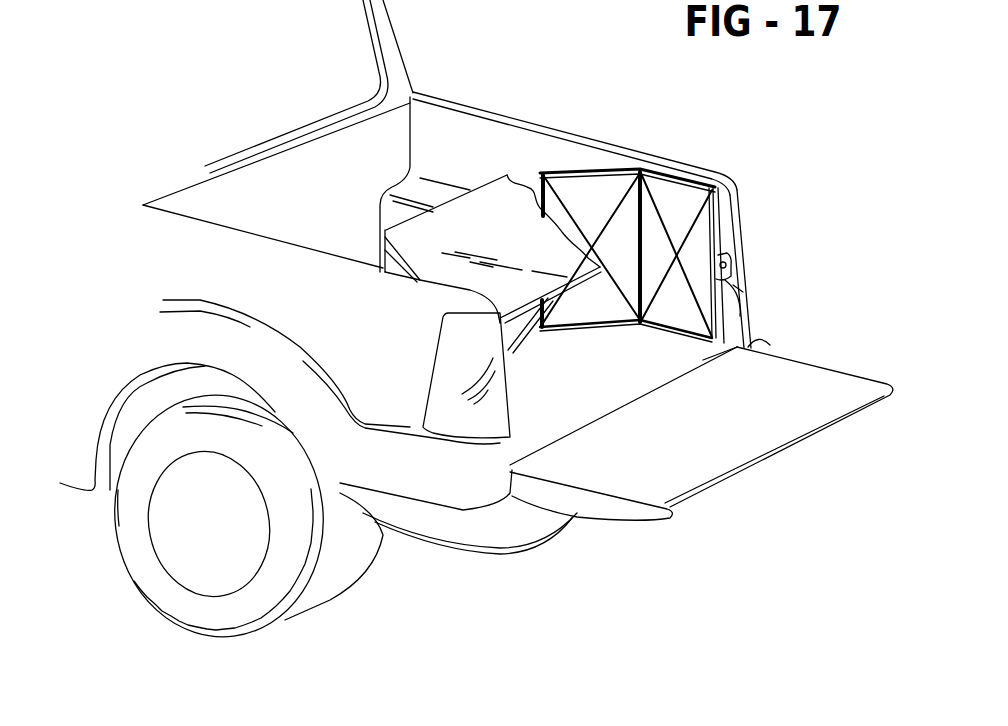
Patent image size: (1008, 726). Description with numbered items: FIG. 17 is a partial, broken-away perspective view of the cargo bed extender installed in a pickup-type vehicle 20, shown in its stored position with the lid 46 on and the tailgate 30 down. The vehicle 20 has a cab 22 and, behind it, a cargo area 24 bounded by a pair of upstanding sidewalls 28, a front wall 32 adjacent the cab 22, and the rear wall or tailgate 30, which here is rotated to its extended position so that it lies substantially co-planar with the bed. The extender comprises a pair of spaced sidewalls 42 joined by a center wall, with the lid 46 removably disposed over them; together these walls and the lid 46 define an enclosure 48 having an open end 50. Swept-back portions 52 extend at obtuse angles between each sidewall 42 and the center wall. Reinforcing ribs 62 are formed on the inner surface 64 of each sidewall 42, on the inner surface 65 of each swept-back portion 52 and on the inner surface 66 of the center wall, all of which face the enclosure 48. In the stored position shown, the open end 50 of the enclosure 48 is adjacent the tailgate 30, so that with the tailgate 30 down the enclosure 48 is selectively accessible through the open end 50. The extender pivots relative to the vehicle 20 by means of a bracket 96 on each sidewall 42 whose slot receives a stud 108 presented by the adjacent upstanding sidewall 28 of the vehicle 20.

The vehicle 20 is at (270, 107).
The cab 22 is at (390, 41).
The cargo area 24 is at (277, 204).
The sidewalls 28 is at (523, 143).
The tailgate 30 is at (833, 393).
The front wall 32 is at (340, 167).
The sidewalls 42 is at (718, 205).
The lid 46 is at (428, 233).
The enclosure 48 is at (599, 382).
The open end 50 is at (717, 323).
The swept-back portions 52 is at (385, 262).
The ribs 62 is at (518, 320).
The inner surface 64 is at (705, 230).
The inner surface 65 is at (567, 183).
The inner surface 66 is at (510, 330).
The bracket 96 is at (723, 277).
The stud 108 is at (724, 256).